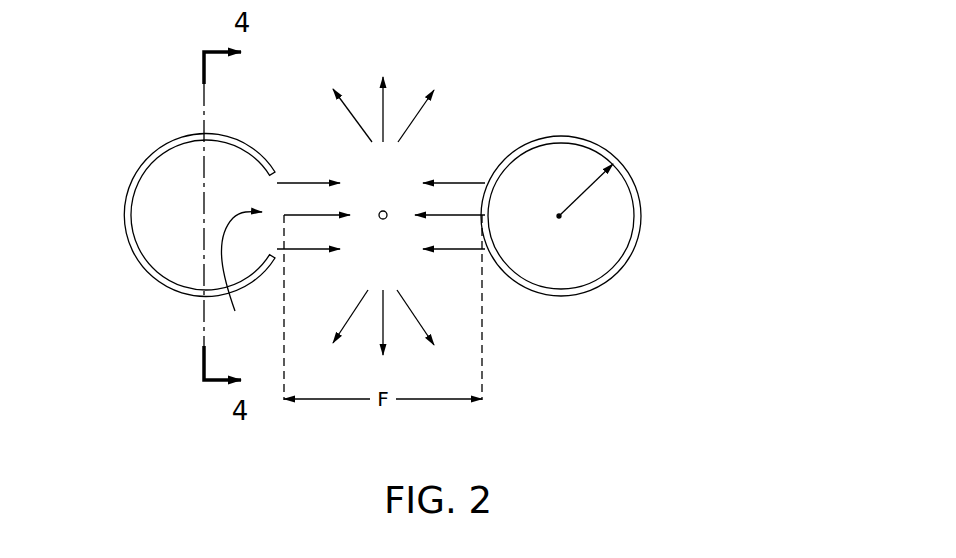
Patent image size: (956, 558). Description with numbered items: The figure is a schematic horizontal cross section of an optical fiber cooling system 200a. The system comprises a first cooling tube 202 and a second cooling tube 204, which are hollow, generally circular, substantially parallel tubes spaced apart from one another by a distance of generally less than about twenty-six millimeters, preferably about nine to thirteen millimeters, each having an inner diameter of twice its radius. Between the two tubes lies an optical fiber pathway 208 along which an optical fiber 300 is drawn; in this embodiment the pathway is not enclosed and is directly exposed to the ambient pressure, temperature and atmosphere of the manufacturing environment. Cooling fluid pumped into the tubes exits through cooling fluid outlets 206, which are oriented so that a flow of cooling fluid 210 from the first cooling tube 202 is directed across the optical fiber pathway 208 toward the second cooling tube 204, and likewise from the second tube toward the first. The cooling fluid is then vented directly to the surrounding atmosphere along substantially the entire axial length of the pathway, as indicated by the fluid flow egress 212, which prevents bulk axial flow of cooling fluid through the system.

The optical fiber cooling system 200a is at (542, 37).
The first cooling tube 202 is at (124, 215).
The second cooling tube 204 is at (587, 137).
The cooling fluid outlets 206 is at (241, 275).
The optical fiber pathway 208 is at (297, 119).
The flow of cooling fluid 210 is at (305, 250).
The fluid flow egress 212 is at (412, 123).
The optical fiber 300 is at (384, 211).